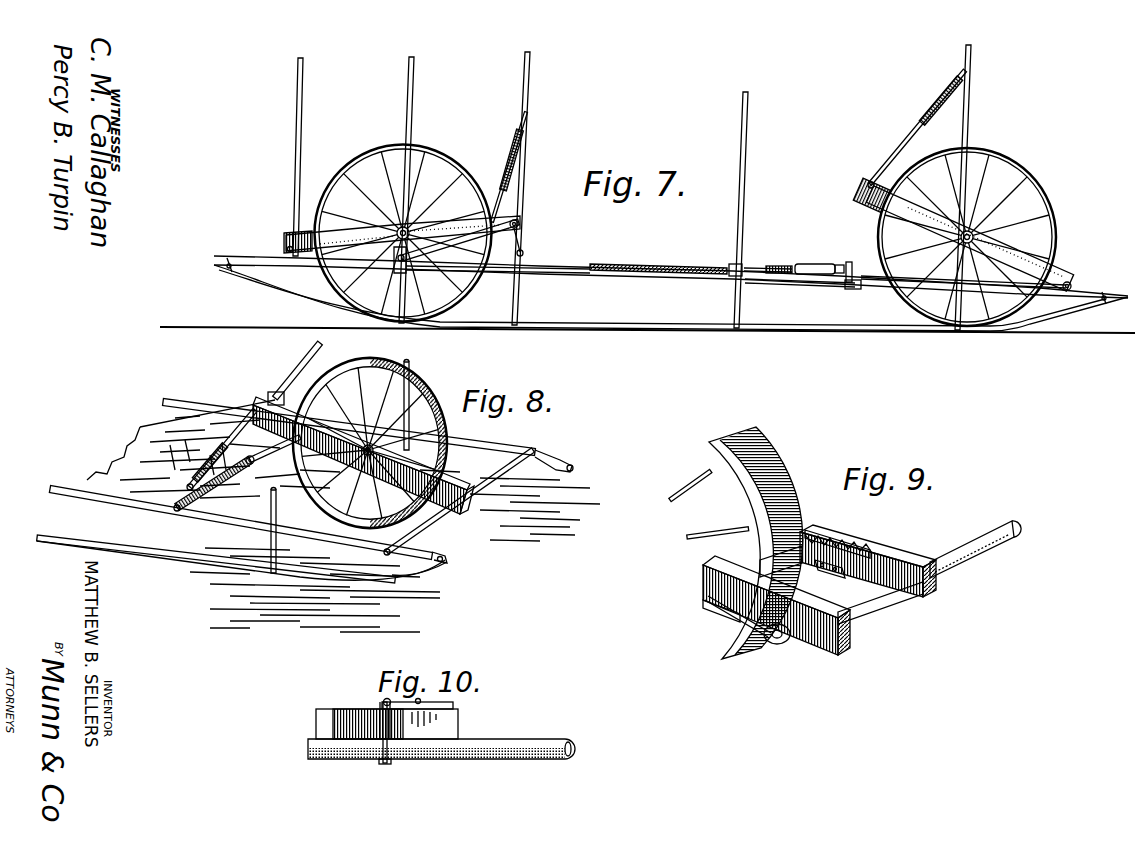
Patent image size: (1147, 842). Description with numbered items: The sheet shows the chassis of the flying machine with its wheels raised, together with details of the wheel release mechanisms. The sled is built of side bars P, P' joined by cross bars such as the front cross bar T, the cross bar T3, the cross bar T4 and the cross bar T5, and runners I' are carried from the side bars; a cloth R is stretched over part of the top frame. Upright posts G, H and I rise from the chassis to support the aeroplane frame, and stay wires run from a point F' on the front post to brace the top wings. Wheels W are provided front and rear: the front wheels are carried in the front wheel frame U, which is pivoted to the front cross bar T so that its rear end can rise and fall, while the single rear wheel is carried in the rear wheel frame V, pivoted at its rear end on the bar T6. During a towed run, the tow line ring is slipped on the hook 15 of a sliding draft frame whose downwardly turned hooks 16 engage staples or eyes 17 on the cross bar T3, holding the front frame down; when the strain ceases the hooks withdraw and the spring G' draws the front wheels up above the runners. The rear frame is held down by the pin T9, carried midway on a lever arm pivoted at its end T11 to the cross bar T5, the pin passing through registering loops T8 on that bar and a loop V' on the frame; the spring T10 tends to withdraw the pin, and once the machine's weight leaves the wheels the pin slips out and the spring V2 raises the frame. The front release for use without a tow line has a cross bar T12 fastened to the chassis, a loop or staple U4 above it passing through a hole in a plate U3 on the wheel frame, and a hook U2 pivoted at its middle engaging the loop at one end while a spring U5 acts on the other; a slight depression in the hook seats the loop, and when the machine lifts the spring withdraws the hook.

In FIG. 7, the wheels W is at (378, 156).
In FIG. 8, the wheels W is at (428, 400).
In FIG. 9, the wheels W is at (782, 472).
In FIG. 7, the point on post F F' is at (278, 157).
In FIG. 7, the upright post G is at (513, 188).
In FIG. 7, the spring G' is at (504, 167).
In FIG. 7, the upright post H is at (752, 150).
In FIG. 8, the upright post H is at (278, 562).
In FIG. 7, the upright post I is at (971, 187).
In FIG. 7, the runners I' is at (671, 293).
In FIG. 8, the runners I' is at (242, 559).
In FIG. 7, the front wheel frame U is at (340, 240).
In FIG. 9, the front wheel frame U is at (910, 556).
In FIG. 10, the front wheel frame U is at (318, 720).
In FIG. 7, the front cross bar T is at (287, 251).
In FIG. 7, the downwardly turned hooks 16 is at (518, 222).
In FIG. 7, the staples or eyes 17 is at (524, 254).
In FIG. 7, the hook 15 is at (394, 272).
In FIG. 7, the cross bar T3 is at (522, 276).
In FIG. 7, the cloth R is at (688, 278).
In FIG. 8, the cloth R is at (148, 424).
In FIG. 7, the cross bar T4 is at (732, 268).
In FIG. 7, the spring T10 is at (772, 266).
In FIG. 8, the spring T10 is at (246, 420).
In FIG. 7, the pin T9 is at (822, 264).
In FIG. 8, the pin T9 is at (208, 468).
In FIG. 7, the loops T8 is at (850, 262).
In FIG. 8, the loops T8 is at (250, 463).
In FIG. 7, the lever arm pivot end T11 is at (812, 288).
In FIG. 8, the lever arm pivot end T11 is at (184, 478).
In FIG. 7, the cross bar T5 is at (853, 290).
In FIG. 8, the cross bar T5 is at (172, 511).
In FIG. 7, the rear wheel frame V is at (974, 238).
In FIG. 8, the rear wheel frame V is at (364, 455).
In FIG. 7, the loop V' is at (861, 197).
In FIG. 7, the spring V2 is at (925, 122).
In FIG. 8, the spring V2 is at (304, 362).
In FIG. 7, the cross bar T6 is at (1074, 289).
In FIG. 8, the cross bar T6 is at (436, 522).
In FIG. 8, the side bar P is at (368, 424).
In FIG. 8, the side bar P' is at (248, 510).
In FIG. 9, the hook U2 is at (845, 560).
In FIG. 10, the hook U2 is at (452, 702).
In FIG. 9, the plate U3 is at (768, 560).
In FIG. 10, the plate U3 is at (383, 703).
In FIG. 9, the loop or staple U4 is at (860, 598).
In FIG. 10, the loop or staple U4 is at (385, 764).
In FIG. 9, the spring U5 is at (835, 532).
In FIG. 9, the cross bar T12 is at (978, 560).
In FIG. 10, the cross bar T12 is at (522, 748).